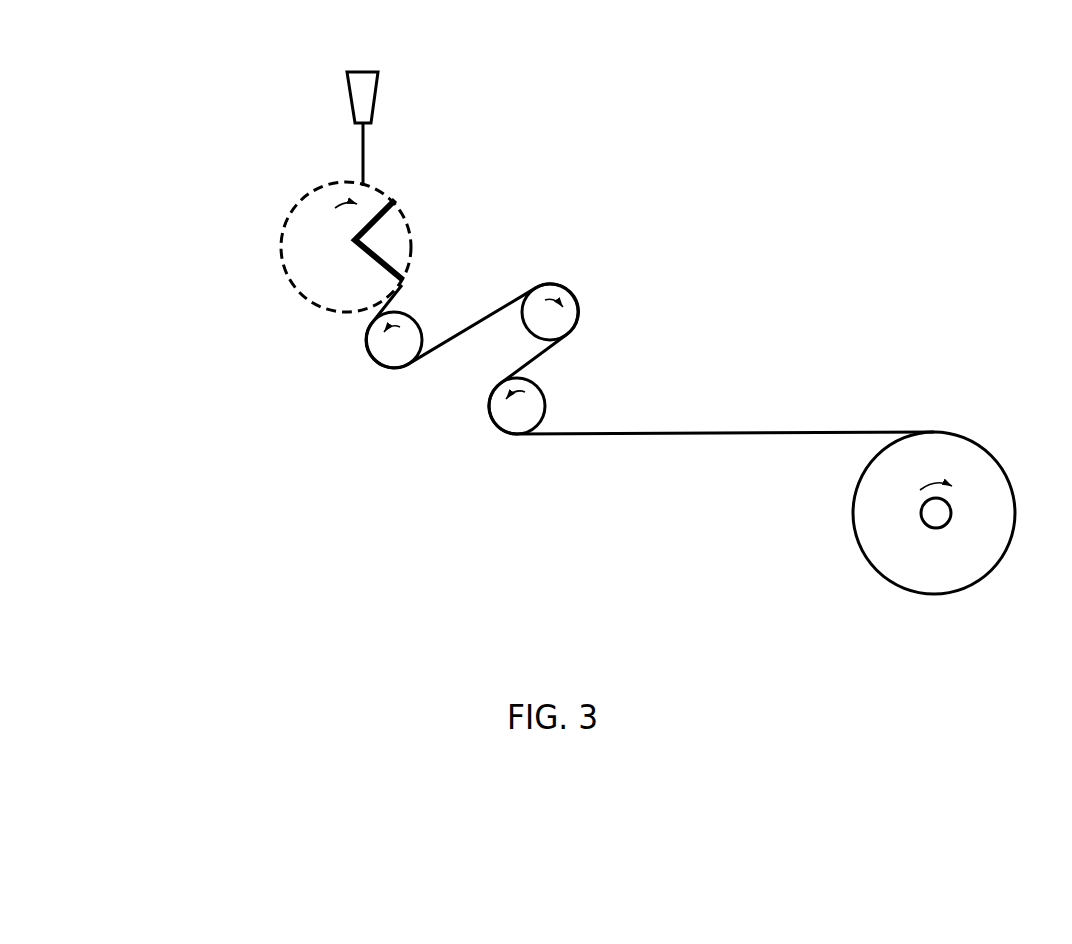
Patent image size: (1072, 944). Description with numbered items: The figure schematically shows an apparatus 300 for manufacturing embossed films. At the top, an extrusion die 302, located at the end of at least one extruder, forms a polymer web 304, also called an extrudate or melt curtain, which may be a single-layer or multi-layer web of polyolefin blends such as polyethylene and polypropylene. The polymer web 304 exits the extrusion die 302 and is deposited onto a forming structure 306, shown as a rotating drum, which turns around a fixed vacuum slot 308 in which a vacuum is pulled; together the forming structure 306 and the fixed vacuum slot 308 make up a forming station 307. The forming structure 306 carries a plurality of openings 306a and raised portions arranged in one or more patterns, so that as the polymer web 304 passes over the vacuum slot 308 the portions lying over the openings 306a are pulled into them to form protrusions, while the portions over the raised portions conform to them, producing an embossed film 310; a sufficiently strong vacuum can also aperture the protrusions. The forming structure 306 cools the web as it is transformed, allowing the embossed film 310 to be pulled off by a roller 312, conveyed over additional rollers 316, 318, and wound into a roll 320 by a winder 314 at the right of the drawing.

The apparatus 300 is at (213, 103).
The extrusion die 302 is at (375, 104).
The polymer web 304 is at (365, 161).
The forming structure 306 is at (316, 305).
The openings 306a is at (278, 228).
The forming station 307 is at (293, 196).
The fixed vacuum slot 308 is at (400, 240).
The embossed film 310 is at (481, 322).
The roller 312 is at (407, 314).
The winder 314 is at (924, 522).
The roller 316 is at (573, 281).
The roller 318 is at (537, 384).
The roll 320 is at (858, 483).